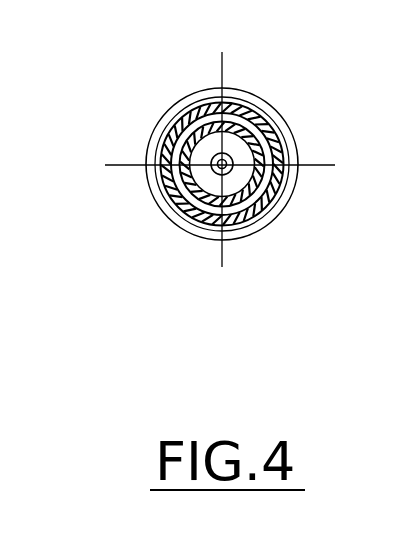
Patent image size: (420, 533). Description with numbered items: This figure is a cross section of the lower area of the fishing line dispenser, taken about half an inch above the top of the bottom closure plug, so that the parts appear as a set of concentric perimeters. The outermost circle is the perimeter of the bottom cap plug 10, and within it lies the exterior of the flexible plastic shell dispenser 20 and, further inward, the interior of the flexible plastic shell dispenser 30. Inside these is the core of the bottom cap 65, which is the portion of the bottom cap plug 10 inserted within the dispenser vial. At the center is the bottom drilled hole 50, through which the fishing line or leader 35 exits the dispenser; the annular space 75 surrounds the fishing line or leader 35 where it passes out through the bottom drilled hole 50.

The bottom cap plug 10 is at (245, 190).
The exterior of the flexible plastic shell dispenser 20 is at (154, 164).
The interior of the flexible plastic shell dispenser 30 is at (151, 209).
The fishing line or leader 35 is at (178, 256).
The bottom drilled hole 50 is at (263, 164).
The core of the bottom cap 65 is at (253, 119).
The annular space 75 is at (174, 102).